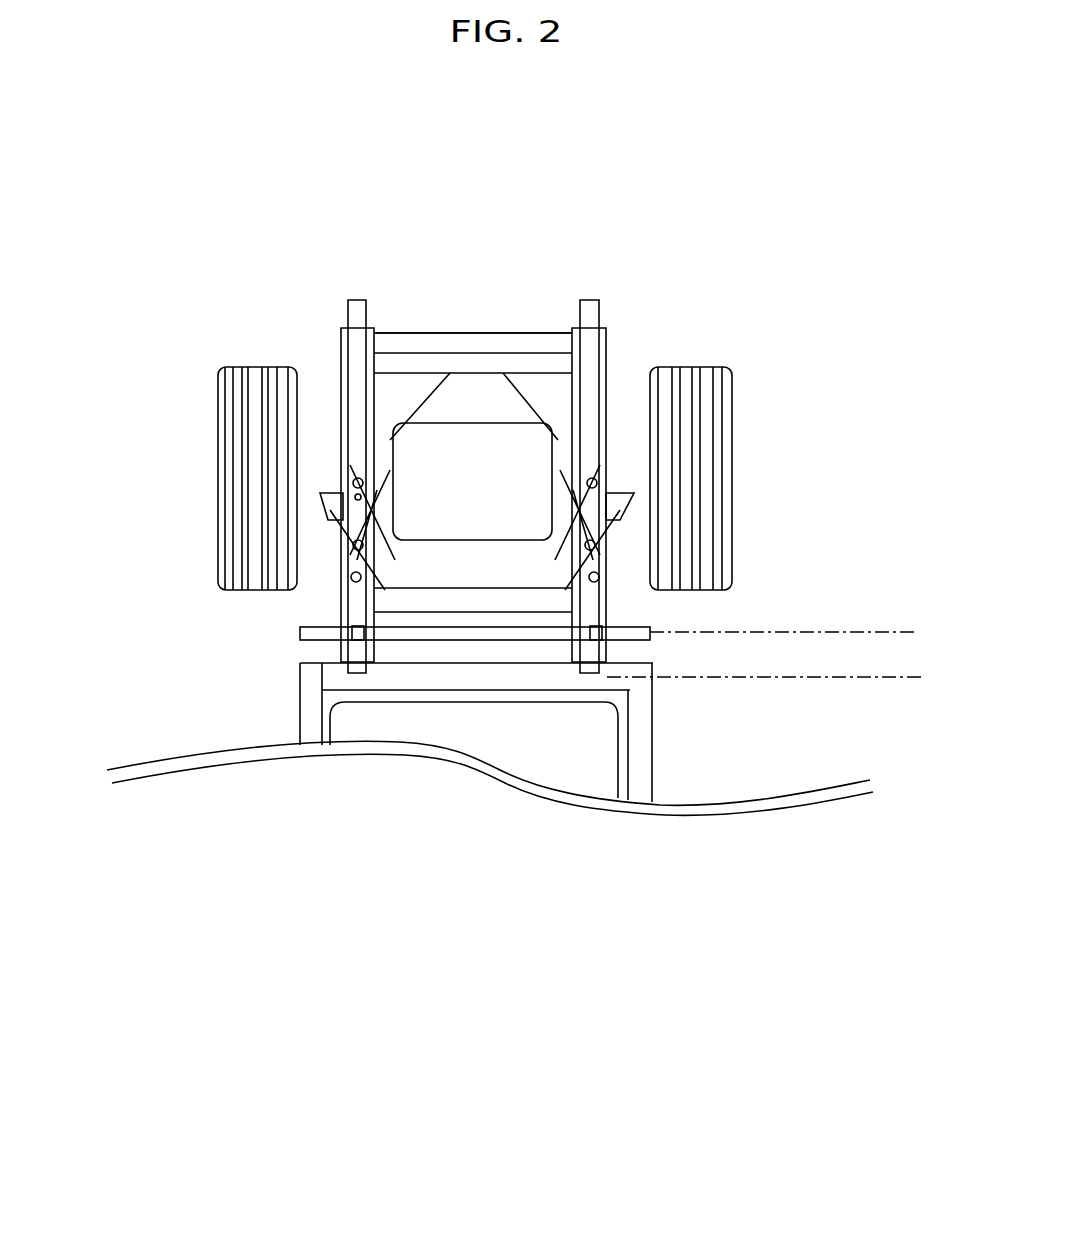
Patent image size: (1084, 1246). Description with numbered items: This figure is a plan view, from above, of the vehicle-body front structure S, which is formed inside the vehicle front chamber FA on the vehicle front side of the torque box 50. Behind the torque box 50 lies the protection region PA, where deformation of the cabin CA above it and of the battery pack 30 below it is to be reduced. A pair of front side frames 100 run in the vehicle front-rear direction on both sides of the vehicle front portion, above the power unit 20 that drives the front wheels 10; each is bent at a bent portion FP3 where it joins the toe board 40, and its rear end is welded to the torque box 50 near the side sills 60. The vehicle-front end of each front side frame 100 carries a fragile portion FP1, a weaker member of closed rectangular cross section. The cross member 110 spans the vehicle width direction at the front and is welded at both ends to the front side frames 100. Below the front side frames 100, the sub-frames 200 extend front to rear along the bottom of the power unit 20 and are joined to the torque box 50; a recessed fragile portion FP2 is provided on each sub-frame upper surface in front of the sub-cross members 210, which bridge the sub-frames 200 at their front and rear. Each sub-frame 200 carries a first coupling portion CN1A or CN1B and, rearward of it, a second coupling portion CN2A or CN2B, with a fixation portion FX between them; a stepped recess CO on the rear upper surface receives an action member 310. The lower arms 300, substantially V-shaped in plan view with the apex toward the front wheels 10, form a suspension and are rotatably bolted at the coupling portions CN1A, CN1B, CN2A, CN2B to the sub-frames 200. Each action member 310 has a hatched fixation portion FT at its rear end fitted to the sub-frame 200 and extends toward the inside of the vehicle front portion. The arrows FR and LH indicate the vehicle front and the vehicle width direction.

The front wheels 10 is at (262, 395).
The power unit 20 is at (355, 497).
The battery pack 30 is at (482, 735).
The toe board 40 is at (360, 630).
The torque box 50 is at (427, 677).
The side sills 60 is at (315, 717).
The front side frames 100 is at (343, 400).
The cross member 110 is at (435, 333).
The sub-frames 200 is at (345, 428).
The sub-cross members 210 is at (503, 362).
The lower arms 300 is at (320, 530).
The action members 310 is at (655, 280).
The fragile portion FP1 is at (587, 313).
The fragile portion FP2 is at (338, 333).
The bent portion FP3 is at (357, 635).
The fixation portion FT is at (330, 500).
The fixation portion FX is at (348, 542).
The coupling portion CN1A is at (353, 484).
The coupling portion CN1B is at (598, 480).
The coupling portion CN2A is at (350, 580).
The coupling portion CN2B is at (601, 576).
The recess CO is at (339, 597).
The vehicle front chamber FA is at (910, 676).
The protection region PA is at (910, 676).
The cabin CA is at (823, 640).
The vehicle-body front structure S is at (924, 148).
The front direction FR is at (148, 1072).
The left direction LH is at (148, 1072).